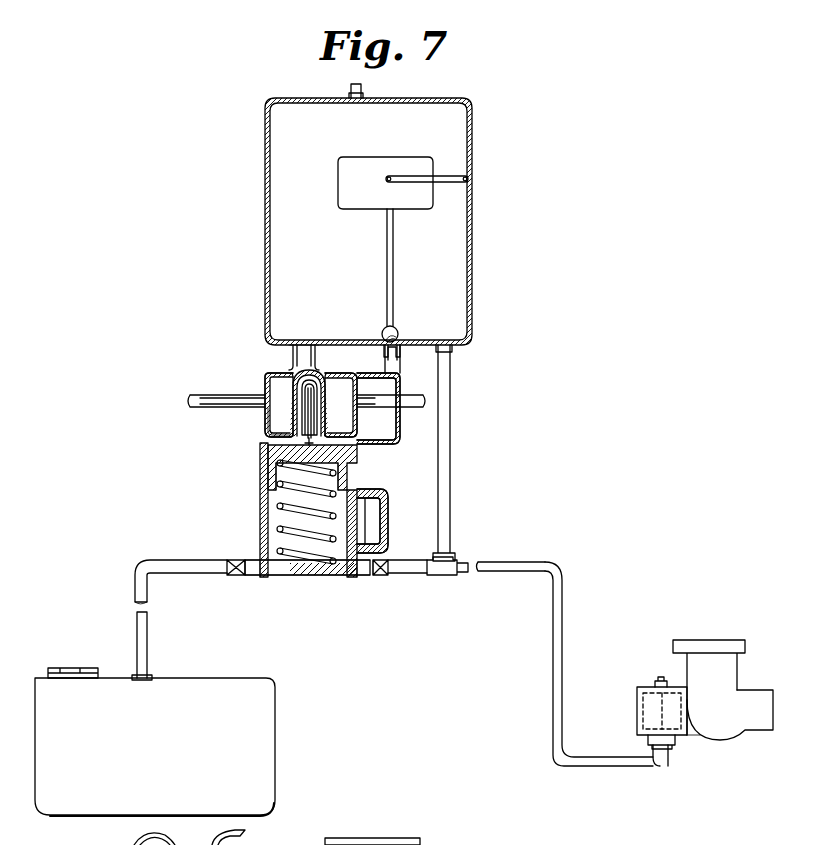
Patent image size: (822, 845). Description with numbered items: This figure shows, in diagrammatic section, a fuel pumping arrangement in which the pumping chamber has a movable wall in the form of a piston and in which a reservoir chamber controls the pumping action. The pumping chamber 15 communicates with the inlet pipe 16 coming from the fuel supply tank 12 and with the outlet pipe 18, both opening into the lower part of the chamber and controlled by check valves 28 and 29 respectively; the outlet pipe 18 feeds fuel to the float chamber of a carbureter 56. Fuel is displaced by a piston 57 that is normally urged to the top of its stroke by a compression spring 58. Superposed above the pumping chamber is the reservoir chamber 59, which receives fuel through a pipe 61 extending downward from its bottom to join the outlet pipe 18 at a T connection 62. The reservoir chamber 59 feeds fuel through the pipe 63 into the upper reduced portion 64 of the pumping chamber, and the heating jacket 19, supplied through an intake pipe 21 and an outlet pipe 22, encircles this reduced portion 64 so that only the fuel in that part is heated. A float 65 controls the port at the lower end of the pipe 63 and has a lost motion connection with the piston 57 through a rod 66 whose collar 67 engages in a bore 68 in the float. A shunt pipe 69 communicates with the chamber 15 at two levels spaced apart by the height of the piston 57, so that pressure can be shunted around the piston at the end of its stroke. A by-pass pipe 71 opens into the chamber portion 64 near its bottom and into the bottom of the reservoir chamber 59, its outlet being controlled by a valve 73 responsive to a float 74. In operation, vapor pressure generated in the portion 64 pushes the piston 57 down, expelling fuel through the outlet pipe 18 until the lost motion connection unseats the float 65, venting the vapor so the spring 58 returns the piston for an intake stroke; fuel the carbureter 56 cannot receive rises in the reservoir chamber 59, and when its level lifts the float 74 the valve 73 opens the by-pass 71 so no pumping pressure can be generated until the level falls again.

The fuel supply tank 12 is at (116, 792).
The pumping chamber 15 is at (276, 510).
The inlet pipe 16 is at (210, 572).
The outlet pipe 18 is at (410, 573).
The heating jacket 19 is at (282, 414).
The intake pipe 21 is at (410, 408).
The outlet pipe 22 is at (206, 404).
The check valve 28 is at (238, 576).
The check valve 29 is at (382, 576).
The carbureter 56 is at (664, 660).
The piston 57 is at (270, 474).
The compression spring 58 is at (280, 532).
The reservoir chamber 59 is at (288, 251).
The pipe 61 is at (445, 470).
The T connection 62 is at (446, 562).
The pipe 63 is at (305, 353).
The upper reduced portion 64 is at (290, 392).
The float 65 is at (323, 384).
The rod 66 is at (263, 456).
The collar 67 is at (318, 396).
The bore 68 is at (313, 410).
The shunt pipe 69 is at (388, 520).
The by-pass pipe 71 is at (396, 441).
The valve 73 is at (400, 337).
The float 74 is at (356, 184).